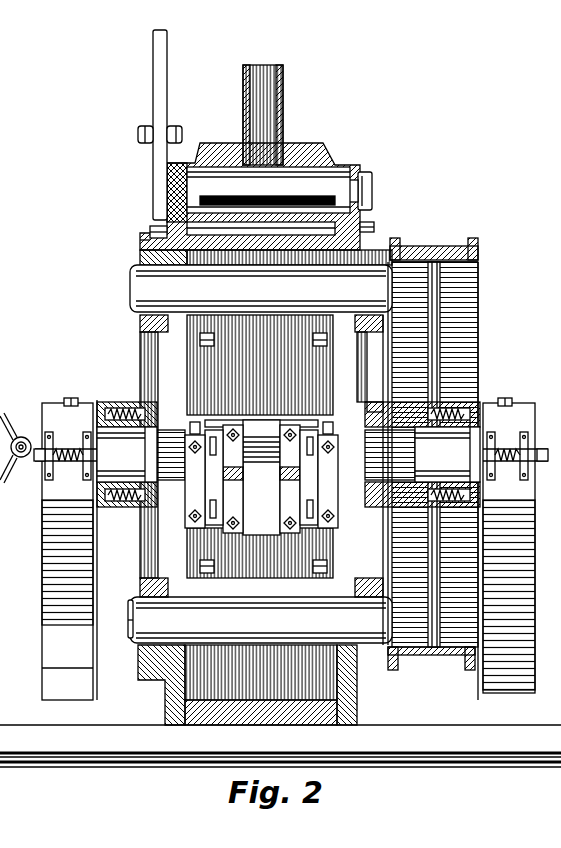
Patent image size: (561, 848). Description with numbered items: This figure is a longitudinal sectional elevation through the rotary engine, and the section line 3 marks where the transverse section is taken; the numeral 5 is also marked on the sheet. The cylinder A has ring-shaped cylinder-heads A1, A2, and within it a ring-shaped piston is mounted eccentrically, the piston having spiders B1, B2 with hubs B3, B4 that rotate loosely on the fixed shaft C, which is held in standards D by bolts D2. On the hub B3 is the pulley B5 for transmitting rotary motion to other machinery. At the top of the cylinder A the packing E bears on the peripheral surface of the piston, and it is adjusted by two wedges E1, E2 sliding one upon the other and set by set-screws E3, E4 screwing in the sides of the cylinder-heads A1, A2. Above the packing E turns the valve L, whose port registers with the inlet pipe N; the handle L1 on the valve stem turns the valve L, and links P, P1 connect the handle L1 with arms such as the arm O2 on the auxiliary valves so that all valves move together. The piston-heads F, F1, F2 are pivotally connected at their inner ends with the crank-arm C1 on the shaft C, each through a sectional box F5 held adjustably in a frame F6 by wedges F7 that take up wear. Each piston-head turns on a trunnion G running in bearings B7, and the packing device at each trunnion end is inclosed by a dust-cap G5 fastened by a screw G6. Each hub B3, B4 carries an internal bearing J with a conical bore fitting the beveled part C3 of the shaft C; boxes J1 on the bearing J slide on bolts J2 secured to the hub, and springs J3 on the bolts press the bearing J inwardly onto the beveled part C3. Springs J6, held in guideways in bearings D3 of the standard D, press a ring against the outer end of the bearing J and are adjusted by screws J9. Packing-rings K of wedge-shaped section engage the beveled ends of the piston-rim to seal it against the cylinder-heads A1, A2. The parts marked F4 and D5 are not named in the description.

The section line 3 is at (262, 65).
The steam or compressed-air inlet pipe N is at (283, 99).
The valve L is at (216, 165).
The handle L1 is at (158, 84).
The link P is at (176, 126).
The link P1 is at (137, 132).
The cylinder A is at (312, 150).
The cylinder-head A1 is at (362, 170).
The cylinder-head A2 is at (152, 228).
The packing E is at (384, 241).
The wedge E1 is at (372, 198).
The wedge E2 is at (140, 246).
The set-screw E3 is at (374, 224).
The set-screw E4 is at (150, 236).
The packing-ring K is at (402, 251).
The trunnion G is at (160, 288).
The dust-cap G5 is at (134, 306).
The screw G6 is at (130, 623).
The spider B1 is at (366, 372).
The spider B2 is at (170, 394).
The hub B3 is at (367, 408).
The hub B4 is at (150, 404).
The pulley B5 is at (470, 352).
The bearing B7 is at (158, 580).
The piston-head F is at (195, 366).
The piston-head F1 is at (246, 476).
The piston-head F2 is at (180, 658).
The hub F4 is at (300, 476).
The sectional box F5 is at (250, 424).
The frame F6 is at (290, 422).
The wedge F7 is at (212, 460).
The shaft C is at (285, 329).
The crank-arm C1 is at (176, 504).
The beveled part C3 is at (288, 454).
The standard D is at (56, 626).
The bolt D2 is at (70, 398).
The bearing D3 is at (58, 425).
The bracket D5 is at (85, 480).
The internal bearing J is at (132, 410).
The box J1 is at (118, 408).
The bolt J2 is at (164, 484).
The spring J3 is at (484, 492).
The spring J6 is at (70, 445).
The screw J9 is at (40, 462).
The arm O2 is at (8, 414).
The section line 5 is at (5, 556).